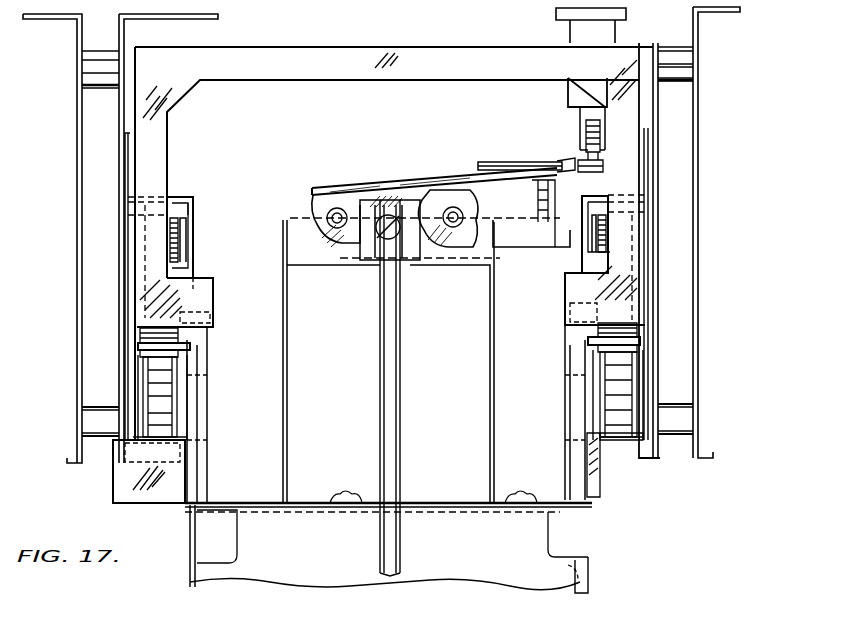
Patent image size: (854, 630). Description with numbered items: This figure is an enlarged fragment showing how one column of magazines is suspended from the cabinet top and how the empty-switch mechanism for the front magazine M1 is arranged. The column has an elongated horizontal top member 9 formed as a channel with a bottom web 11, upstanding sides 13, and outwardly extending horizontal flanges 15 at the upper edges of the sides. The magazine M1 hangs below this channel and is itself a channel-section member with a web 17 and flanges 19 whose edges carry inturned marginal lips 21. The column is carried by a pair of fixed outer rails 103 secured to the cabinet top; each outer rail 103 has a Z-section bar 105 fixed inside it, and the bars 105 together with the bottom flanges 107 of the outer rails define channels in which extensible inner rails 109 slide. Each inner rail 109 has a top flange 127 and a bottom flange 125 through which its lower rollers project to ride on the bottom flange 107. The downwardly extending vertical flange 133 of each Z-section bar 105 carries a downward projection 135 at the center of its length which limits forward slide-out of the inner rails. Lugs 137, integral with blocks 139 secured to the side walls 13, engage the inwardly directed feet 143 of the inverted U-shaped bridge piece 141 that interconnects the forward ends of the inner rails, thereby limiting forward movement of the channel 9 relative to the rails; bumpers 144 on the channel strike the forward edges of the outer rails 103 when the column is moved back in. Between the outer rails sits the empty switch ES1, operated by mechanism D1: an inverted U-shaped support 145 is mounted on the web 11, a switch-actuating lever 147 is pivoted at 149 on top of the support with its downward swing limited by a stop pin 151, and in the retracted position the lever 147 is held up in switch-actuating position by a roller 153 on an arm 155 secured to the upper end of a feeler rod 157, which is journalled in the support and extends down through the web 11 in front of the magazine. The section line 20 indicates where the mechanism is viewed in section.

The bridge piece 141 is at (343, 56).
The empty switch ES1 is at (570, 97).
The empty switch operating mechanism D1 is at (375, 144).
The switch-actuating lever 147 is at (417, 178).
The stop pin 151 is at (449, 205).
The pivot 149 is at (330, 228).
The roller 153 is at (508, 224).
The arm 155 is at (473, 248).
The section line 20- 20 is at (262, 192).
The outer rail 103 is at (109, 114).
The Z-section bar 105 is at (196, 206).
The inner rail 109 is at (173, 202).
The top flange 127 is at (126, 208).
The vertical flange 133 is at (190, 237).
The feet 143 is at (203, 278).
The projection 135 is at (212, 290).
The lug 137 is at (213, 318).
The horizontal flange 15 is at (138, 347).
The upstanding side 13 is at (187, 405).
The block 139 is at (210, 450).
The bottom flange 107 is at (122, 470).
The bumper 144 is at (147, 493).
The bottom flange 125 is at (622, 441).
The bottom web 11 is at (353, 500).
The support 145 is at (286, 396).
The feeler rod 157 is at (394, 390).
The web 17 is at (190, 578).
The top member 9 is at (578, 513).
The inturned marginal lip 21 is at (577, 588).
The flange 19 is at (464, 577).
The magazine M1 is at (289, 586).